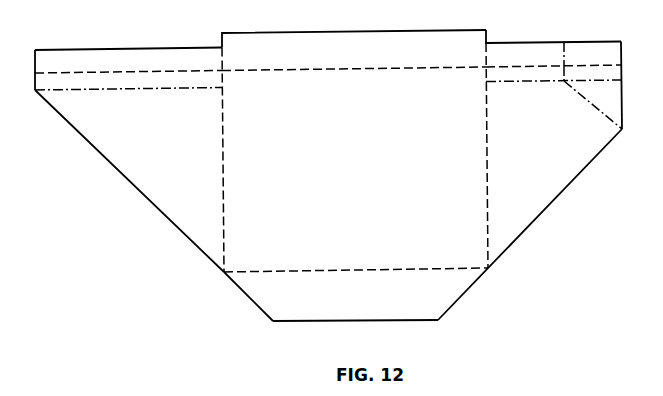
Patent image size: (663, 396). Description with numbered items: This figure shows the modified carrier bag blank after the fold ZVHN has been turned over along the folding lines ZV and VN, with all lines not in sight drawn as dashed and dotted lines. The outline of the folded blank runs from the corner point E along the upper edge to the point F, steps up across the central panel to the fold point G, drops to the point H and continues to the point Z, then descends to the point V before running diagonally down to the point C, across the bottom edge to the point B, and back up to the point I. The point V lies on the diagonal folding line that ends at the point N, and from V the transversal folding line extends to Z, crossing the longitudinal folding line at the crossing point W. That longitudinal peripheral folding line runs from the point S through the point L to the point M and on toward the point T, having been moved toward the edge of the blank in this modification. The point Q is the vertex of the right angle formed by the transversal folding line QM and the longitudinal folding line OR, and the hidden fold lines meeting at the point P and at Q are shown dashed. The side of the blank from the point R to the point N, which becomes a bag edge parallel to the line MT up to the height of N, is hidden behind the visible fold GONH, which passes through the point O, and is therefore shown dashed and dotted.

The corner point E is at (121, 47).
The corner point F is at (348, 32).
The fold point G is at (553, 31).
The end point Z of folding line VZ Z is at (628, 75).
The point V on line QN V is at (539, 222).
The corner point C is at (362, 331).
The corner point B is at (249, 307).
The fold point P is at (261, 192).
The end point I of line IN I is at (29, 75).
The end point S of folding line ST S is at (121, 72).
The end point O of longitudinal folding line OR O is at (137, 89).
The point L is at (229, 160).
The end point M of transversal folding line QM M is at (354, 60).
The crossing point W is at (565, 67).
The point Q is at (496, 166).
The end point R of longitudinal folding line OR R is at (545, 86).
The fold point H is at (556, 44).
The end point T of folding line ST T is at (557, 65).
The end point N of diagonal folding line QN N is at (588, 105).